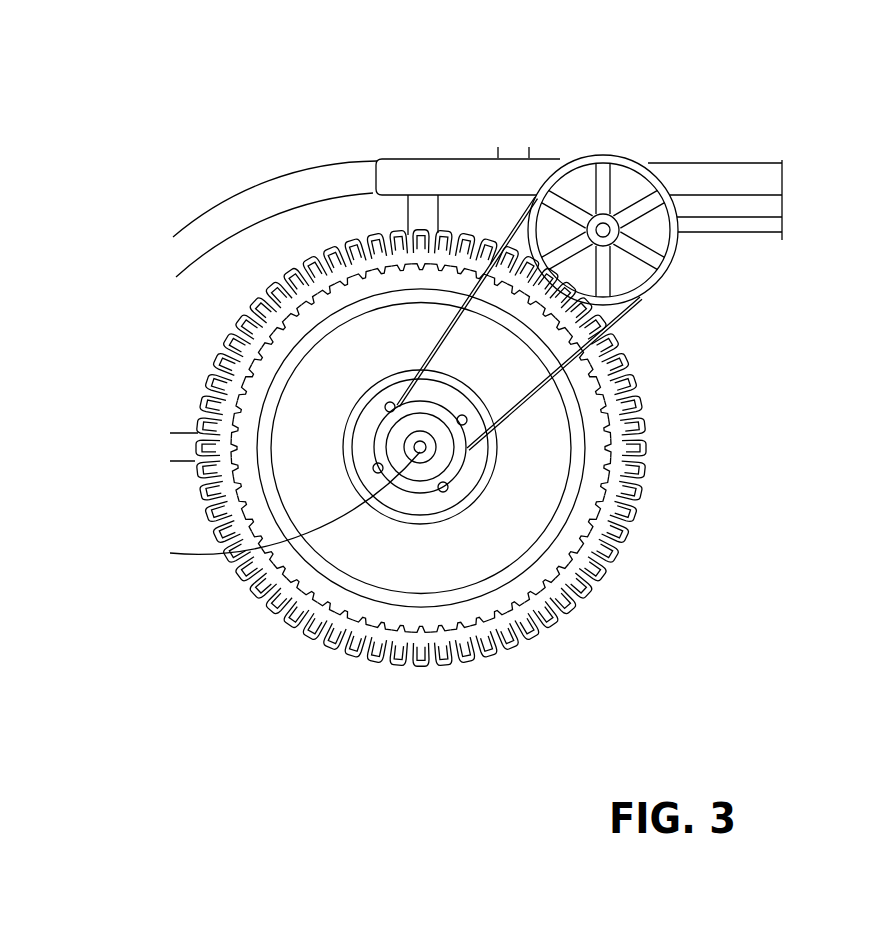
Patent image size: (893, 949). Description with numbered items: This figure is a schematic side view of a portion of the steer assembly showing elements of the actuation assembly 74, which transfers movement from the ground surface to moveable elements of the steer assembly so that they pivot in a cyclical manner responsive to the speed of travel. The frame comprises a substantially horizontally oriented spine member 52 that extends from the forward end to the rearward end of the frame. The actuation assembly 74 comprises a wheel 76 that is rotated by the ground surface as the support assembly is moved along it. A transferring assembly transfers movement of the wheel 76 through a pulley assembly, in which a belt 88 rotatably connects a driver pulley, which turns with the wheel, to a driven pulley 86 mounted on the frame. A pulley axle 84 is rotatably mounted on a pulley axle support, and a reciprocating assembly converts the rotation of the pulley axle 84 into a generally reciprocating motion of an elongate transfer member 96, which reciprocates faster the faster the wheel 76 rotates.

The actuation assembly 74 is at (482, 140).
The wheel 76 is at (572, 523).
The pulley axle 84 is at (598, 214).
The driven pulley 86 is at (636, 160).
The spine member 52 is at (757, 173).
The transfer member 96 is at (733, 232).
The belt 88 is at (623, 313).